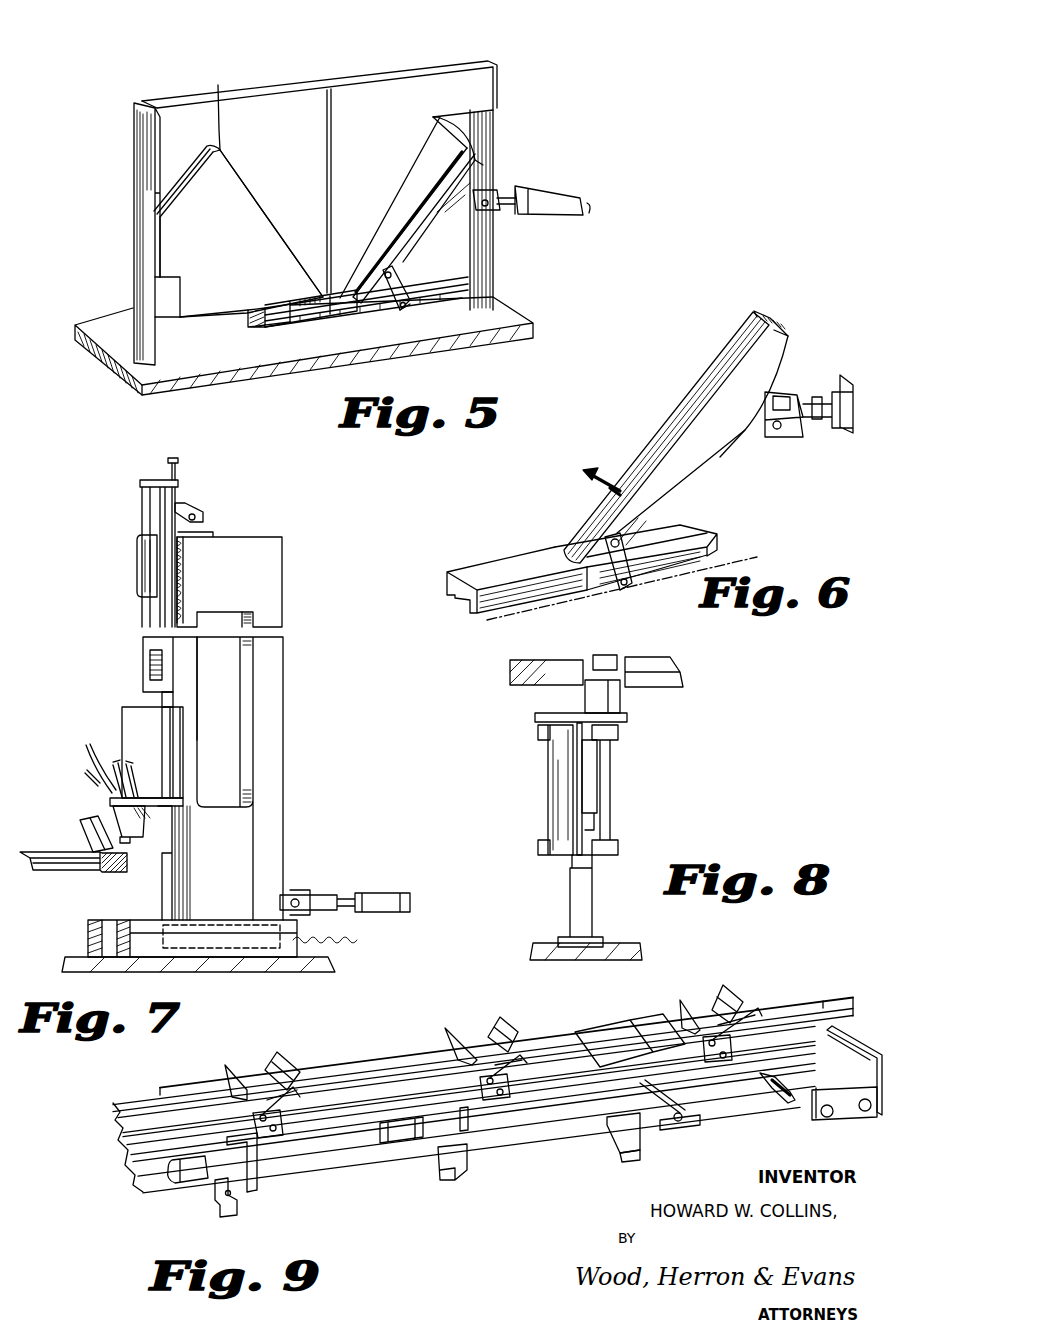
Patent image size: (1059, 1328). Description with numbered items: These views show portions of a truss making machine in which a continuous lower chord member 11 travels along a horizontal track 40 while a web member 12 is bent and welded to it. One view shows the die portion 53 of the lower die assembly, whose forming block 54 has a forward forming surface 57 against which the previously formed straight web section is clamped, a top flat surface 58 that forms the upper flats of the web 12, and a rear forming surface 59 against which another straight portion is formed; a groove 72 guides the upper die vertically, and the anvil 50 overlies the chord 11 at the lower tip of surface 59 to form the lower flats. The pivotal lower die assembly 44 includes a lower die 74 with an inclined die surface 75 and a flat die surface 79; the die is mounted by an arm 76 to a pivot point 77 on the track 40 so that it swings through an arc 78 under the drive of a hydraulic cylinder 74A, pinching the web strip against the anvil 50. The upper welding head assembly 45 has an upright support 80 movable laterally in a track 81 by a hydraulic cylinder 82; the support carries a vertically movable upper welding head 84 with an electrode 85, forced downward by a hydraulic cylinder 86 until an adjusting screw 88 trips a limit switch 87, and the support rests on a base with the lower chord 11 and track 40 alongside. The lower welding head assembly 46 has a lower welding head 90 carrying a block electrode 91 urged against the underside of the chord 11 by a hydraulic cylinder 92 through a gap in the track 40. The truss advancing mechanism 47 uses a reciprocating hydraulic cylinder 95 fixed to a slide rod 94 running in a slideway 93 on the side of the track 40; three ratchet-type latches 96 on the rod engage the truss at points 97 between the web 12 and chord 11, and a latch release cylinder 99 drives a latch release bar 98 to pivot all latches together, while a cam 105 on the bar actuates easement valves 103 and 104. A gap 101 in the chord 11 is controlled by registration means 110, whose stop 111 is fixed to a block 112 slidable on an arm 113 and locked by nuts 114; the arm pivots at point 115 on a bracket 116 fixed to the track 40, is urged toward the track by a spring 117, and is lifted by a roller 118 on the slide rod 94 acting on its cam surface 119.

In FIG. 5, the lower chord member 11 is at (470, 284).
In FIG. 6, the lower chord member 11 is at (700, 544).
In FIG. 7, the lower chord member 11 is at (30, 862).
In FIG. 8, the lower chord member 11 is at (665, 664).
In FIG. 9, the lower chord member 11 is at (160, 1092).
In FIG. 7, the supporting web member 12 is at (78, 830).
In FIG. 9, the supporting web member 12 is at (283, 1058).
In FIG. 5, the lower chord supporting track 40 is at (267, 335).
In FIG. 6, the lower chord supporting track 40 is at (778, 558).
In FIG. 7, the lower chord supporting track 40 is at (68, 874).
In FIG. 8, the lower chord supporting track 40 is at (665, 686).
In FIG. 9, the lower chord supporting track 40 is at (137, 1140).
In FIG. 5, the pivotal lower die assembly 44 is at (483, 167).
In FIG. 6, the pivotal lower die assembly 44 is at (668, 407).
In FIG. 7, the upper welding head assembly 45 is at (105, 706).
In FIG. 8, the lower welding head assembly 46 is at (655, 790).
In FIG. 9, the truss advancing mechanism 47 is at (368, 1206).
In FIG. 5, the anvil 50 is at (342, 302).
In FIG. 6, the anvil 50 is at (490, 565).
In FIG. 5, the die portion 53 is at (396, 72).
In FIG. 5, the forming block 54 is at (241, 233).
In FIG. 5, the forward forming surface 57 is at (180, 186).
In FIG. 5, the top flat surface 58 is at (220, 105).
In FIG. 5, the rear forming surface 59 is at (262, 216).
In FIG. 5, the groove 72 is at (328, 96).
In FIG. 5, the lower die 74 is at (437, 183).
In FIG. 6, the lower die 74 is at (688, 468).
In FIG. 5, the hydraulic cylinder 74A is at (555, 200).
In FIG. 6, the hydraulic cylinder 74A is at (846, 376).
In FIG. 5, the inclined die surface 75 is at (430, 213).
In FIG. 6, the inclined die surface 75 is at (690, 422).
In FIG. 5, the arm 76 is at (405, 280).
In FIG. 6, the arm 76 is at (636, 572).
In FIG. 5, the pivot point 77 is at (405, 308).
In FIG. 6, the pivot point 77 is at (628, 586).
In FIG. 6, the arc 78 is at (608, 475).
In FIG. 5, the flat die surface 79 is at (483, 165).
In FIG. 6, the flat die surface 79 is at (772, 316).
In FIG. 7, the upright support 80 is at (262, 580).
In FIG. 7, the track 81 is at (110, 948).
In FIG. 7, the hydraulic cylinder 82 is at (375, 890).
In FIG. 7, the upper welding head 84 is at (100, 770).
In FIG. 7, the electrode 85 is at (130, 845).
In FIG. 7, the hydraulic cylinder 86 is at (140, 590).
In FIG. 7, the limit switch 87 is at (205, 511).
In FIG. 7, the adjusting screw 88 is at (180, 468).
In FIG. 8, the lower welding head 90 is at (618, 705).
In FIG. 8, the block electrode 91 is at (588, 695).
In FIG. 8, the hydraulic cylinder 92 is at (590, 790).
In FIG. 9, the slideway 93 is at (140, 1160).
In FIG. 9, the slide rod 94 is at (275, 1140).
In FIG. 9, the reciprocating hydraulic cylinder 95 is at (185, 1183).
In FIG. 9, the ratchet-type latches 96 is at (300, 1090).
In FIG. 9, the engagement points 97 is at (270, 1112).
In FIG. 9, the latch release bar 98 is at (580, 1095).
In FIG. 9, the latch release cylinder 99 is at (405, 1143).
In FIG. 9, the gap 101 is at (590, 1030).
In FIG. 9, the valve 103 is at (462, 1178).
In FIG. 9, the valve 104 is at (237, 1212).
In FIG. 9, the cam 105 is at (262, 1184).
In FIG. 9, the registration means 110 is at (855, 1145).
In FIG. 9, the stop 111 is at (860, 1040).
In FIG. 9, the block 112 is at (812, 1120).
In FIG. 9, the arm 113 is at (760, 1105).
In FIG. 9, the nuts 114 is at (840, 1118).
In FIG. 9, the pivot point 115 is at (636, 1160).
In FIG. 9, the bracket 116 is at (612, 1140).
In FIG. 9, the spring 117 is at (770, 1105).
In FIG. 9, the roller 118 is at (682, 1125).
In FIG. 9, the cam surface 119 is at (705, 1135).